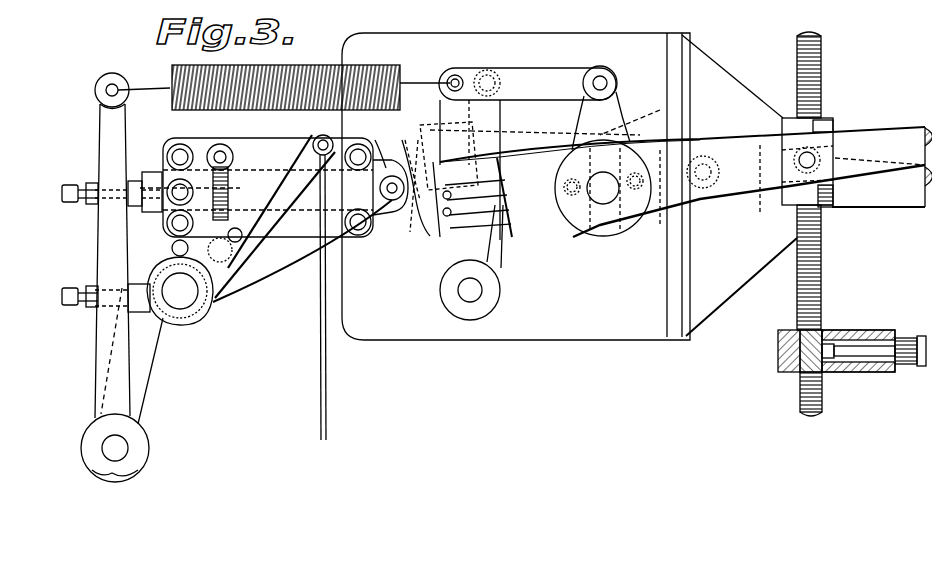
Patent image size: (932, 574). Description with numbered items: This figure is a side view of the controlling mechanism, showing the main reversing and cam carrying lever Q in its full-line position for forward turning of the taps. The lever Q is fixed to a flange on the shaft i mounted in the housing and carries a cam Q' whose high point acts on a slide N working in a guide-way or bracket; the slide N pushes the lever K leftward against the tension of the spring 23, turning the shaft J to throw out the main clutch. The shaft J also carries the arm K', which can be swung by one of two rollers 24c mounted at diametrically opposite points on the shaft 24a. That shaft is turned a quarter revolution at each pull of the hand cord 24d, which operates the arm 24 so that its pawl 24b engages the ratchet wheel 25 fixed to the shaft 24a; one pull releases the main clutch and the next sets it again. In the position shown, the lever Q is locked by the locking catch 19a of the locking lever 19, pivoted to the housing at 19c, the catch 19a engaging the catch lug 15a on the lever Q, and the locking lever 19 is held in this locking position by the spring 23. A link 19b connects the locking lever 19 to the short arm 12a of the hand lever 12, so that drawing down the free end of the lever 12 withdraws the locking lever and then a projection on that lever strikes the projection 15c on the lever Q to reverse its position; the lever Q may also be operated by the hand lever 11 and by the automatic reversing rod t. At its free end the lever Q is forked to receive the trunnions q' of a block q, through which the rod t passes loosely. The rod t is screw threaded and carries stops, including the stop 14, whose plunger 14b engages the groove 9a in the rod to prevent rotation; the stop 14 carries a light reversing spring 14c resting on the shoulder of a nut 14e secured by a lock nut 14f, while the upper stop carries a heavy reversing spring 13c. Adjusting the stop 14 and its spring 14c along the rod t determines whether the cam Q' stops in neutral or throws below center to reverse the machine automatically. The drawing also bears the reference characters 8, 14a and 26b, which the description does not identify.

The heavy reversing spring 13c is at (13, 53).
The shaft 8 is at (0, 118).
The upper clamp bolt 14a is at (40, 165).
The light reversing spring 14c is at (0, 216).
The nut 14e is at (0, 250).
The lock nut 14f is at (0, 283).
The stop 14 is at (0, 318).
The cam follower pin 26b is at (140, 313).
The arm K is at (97, 245).
The arm K' is at (139, 356).
The shaft J is at (118, 447).
The slide N is at (266, 143).
The arm 24 is at (256, 187).
The shaft 24a is at (213, 307).
The pawl 24b is at (248, 280).
The rollers 24c is at (200, 240).
The hand cord 24d is at (328, 380).
The ratchet wheel 25 is at (193, 327).
The spring 23 is at (272, 70).
The link 19b is at (540, 72).
The locking lever 19 is at (470, 170).
The locking catch 19a is at (528, 138).
The pivot 19c is at (500, 290).
The catch lug 15a is at (449, 162).
The projection 15c is at (489, 197).
The lever Q is at (570, 151).
The cam Q' is at (411, 174).
The hand lever 12 is at (870, 137).
The short arm 12a is at (512, 212).
The shaft i is at (601, 205).
The hand lever 11 is at (920, 198).
The reversing rod t is at (822, 60).
The block q is at (830, 182).
The trunnions q' is at (787, 179).
The plunger 14b is at (838, 335).
The groove 9a is at (822, 374).